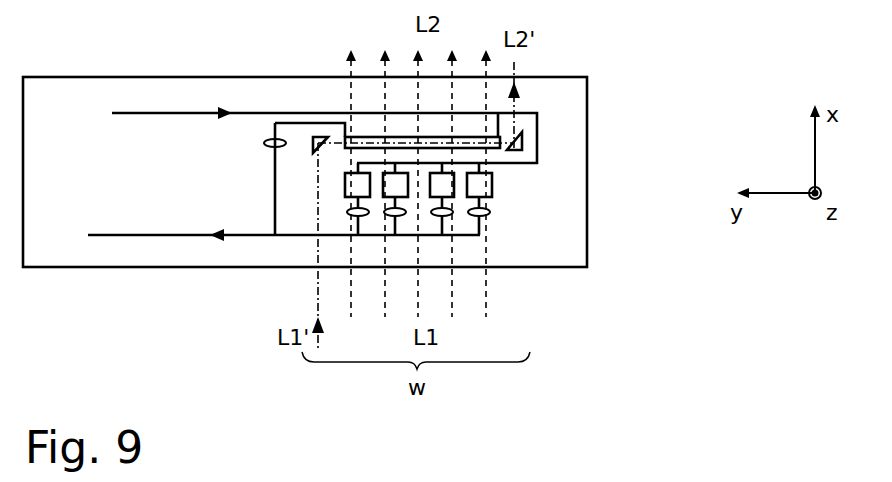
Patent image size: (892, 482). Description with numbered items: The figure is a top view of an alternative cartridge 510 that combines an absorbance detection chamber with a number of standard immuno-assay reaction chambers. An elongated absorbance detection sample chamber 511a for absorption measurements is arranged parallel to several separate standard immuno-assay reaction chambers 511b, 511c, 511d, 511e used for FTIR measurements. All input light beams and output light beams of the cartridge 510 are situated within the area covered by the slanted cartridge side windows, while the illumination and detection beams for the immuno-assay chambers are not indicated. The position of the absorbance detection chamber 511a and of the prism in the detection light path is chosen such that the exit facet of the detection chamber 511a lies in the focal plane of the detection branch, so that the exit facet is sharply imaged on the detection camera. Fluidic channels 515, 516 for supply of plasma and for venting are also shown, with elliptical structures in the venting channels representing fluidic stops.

The cartridge 510 is at (587, 110).
The absorbance detection sample chamber 511a is at (373, 137).
The immuno-assay reaction chamber 511b is at (345, 188).
The immuno-assay reaction chamber 511c is at (388, 185).
The immuno-assay reaction chamber 511d is at (440, 190).
The immuno-assay reaction chamber 511e is at (490, 182).
The input optical fiber 515 is at (140, 113).
The output optical fiber 516 is at (108, 236).